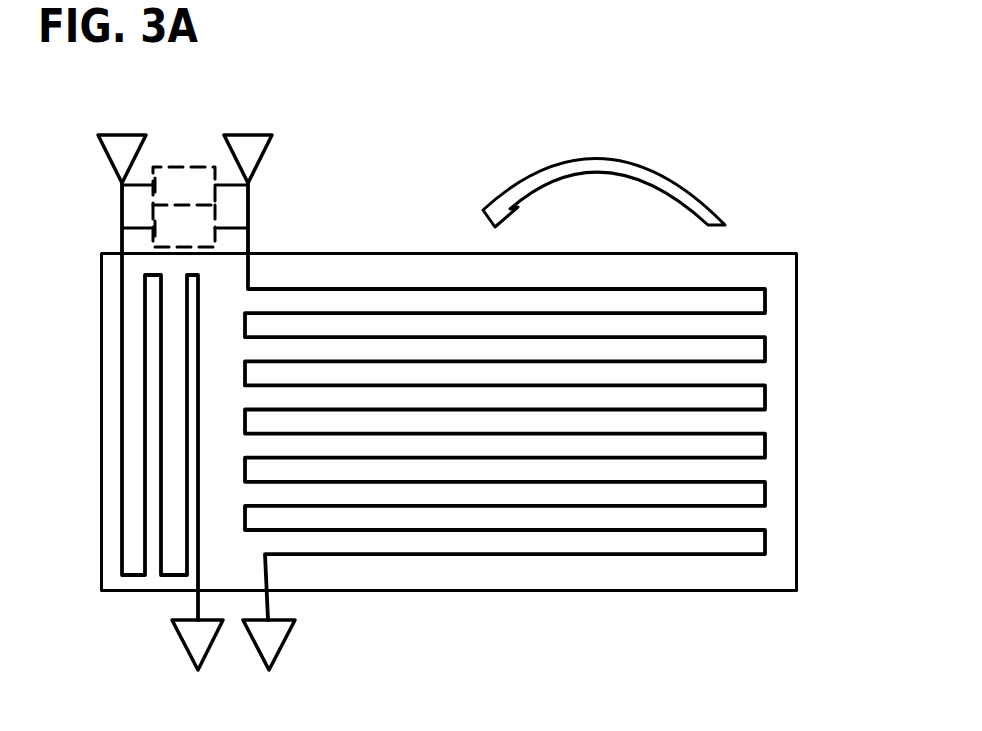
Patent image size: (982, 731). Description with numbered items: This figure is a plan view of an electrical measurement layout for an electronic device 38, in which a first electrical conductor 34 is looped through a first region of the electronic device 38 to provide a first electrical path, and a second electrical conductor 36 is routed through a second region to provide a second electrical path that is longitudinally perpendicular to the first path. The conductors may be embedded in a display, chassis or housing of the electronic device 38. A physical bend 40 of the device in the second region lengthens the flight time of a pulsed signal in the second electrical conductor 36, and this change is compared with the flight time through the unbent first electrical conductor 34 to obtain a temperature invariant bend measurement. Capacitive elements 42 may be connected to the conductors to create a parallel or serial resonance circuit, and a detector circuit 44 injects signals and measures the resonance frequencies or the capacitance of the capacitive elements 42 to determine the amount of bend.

The first electrical conductor 34 is at (122, 559).
The second electrical conductor 36 is at (559, 555).
The electronic device 38 is at (798, 352).
The physical bend 40 is at (700, 182).
The capacitive elements 42 is at (185, 186).
The detector circuit 44 is at (185, 226).